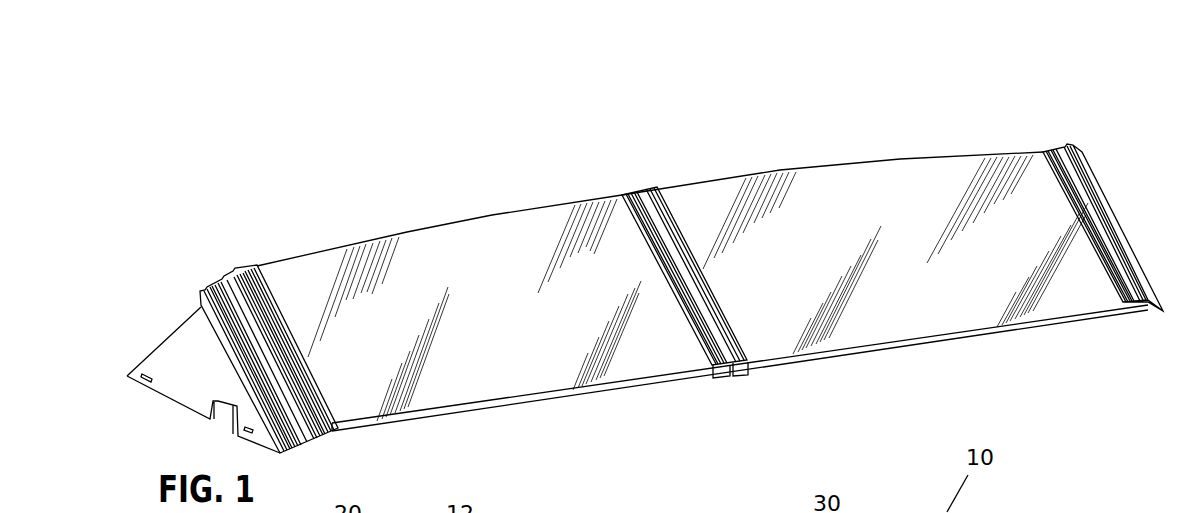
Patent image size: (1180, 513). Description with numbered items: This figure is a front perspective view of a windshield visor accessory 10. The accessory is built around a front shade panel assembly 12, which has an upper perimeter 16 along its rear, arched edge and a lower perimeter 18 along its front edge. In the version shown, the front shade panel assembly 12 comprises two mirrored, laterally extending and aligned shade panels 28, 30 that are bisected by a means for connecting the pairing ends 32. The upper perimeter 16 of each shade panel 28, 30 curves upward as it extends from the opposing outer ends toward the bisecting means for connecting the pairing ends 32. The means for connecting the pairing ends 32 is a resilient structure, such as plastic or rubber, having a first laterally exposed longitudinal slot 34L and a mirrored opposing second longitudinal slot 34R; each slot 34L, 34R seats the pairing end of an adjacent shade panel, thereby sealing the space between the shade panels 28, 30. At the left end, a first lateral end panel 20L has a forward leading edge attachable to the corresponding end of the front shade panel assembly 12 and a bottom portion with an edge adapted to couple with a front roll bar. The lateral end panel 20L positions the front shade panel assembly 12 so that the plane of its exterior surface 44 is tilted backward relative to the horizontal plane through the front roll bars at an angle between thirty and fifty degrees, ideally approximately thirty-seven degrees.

The windshield visor accessory 10 is at (612, 254).
The front shade panel assembly 12 is at (762, 144).
The upper perimeter 16 is at (474, 265).
The lower perimeter 18 is at (572, 398).
The first lateral end panel 20L is at (158, 306).
The shade panel 28 is at (492, 215).
The shade panel 30 is at (903, 157).
The means for connecting the pairing ends 32 is at (642, 165).
The first longitudinal slot 34L is at (723, 378).
The second longitudinal slot 34R is at (742, 376).
The exterior surface 44 is at (543, 270).